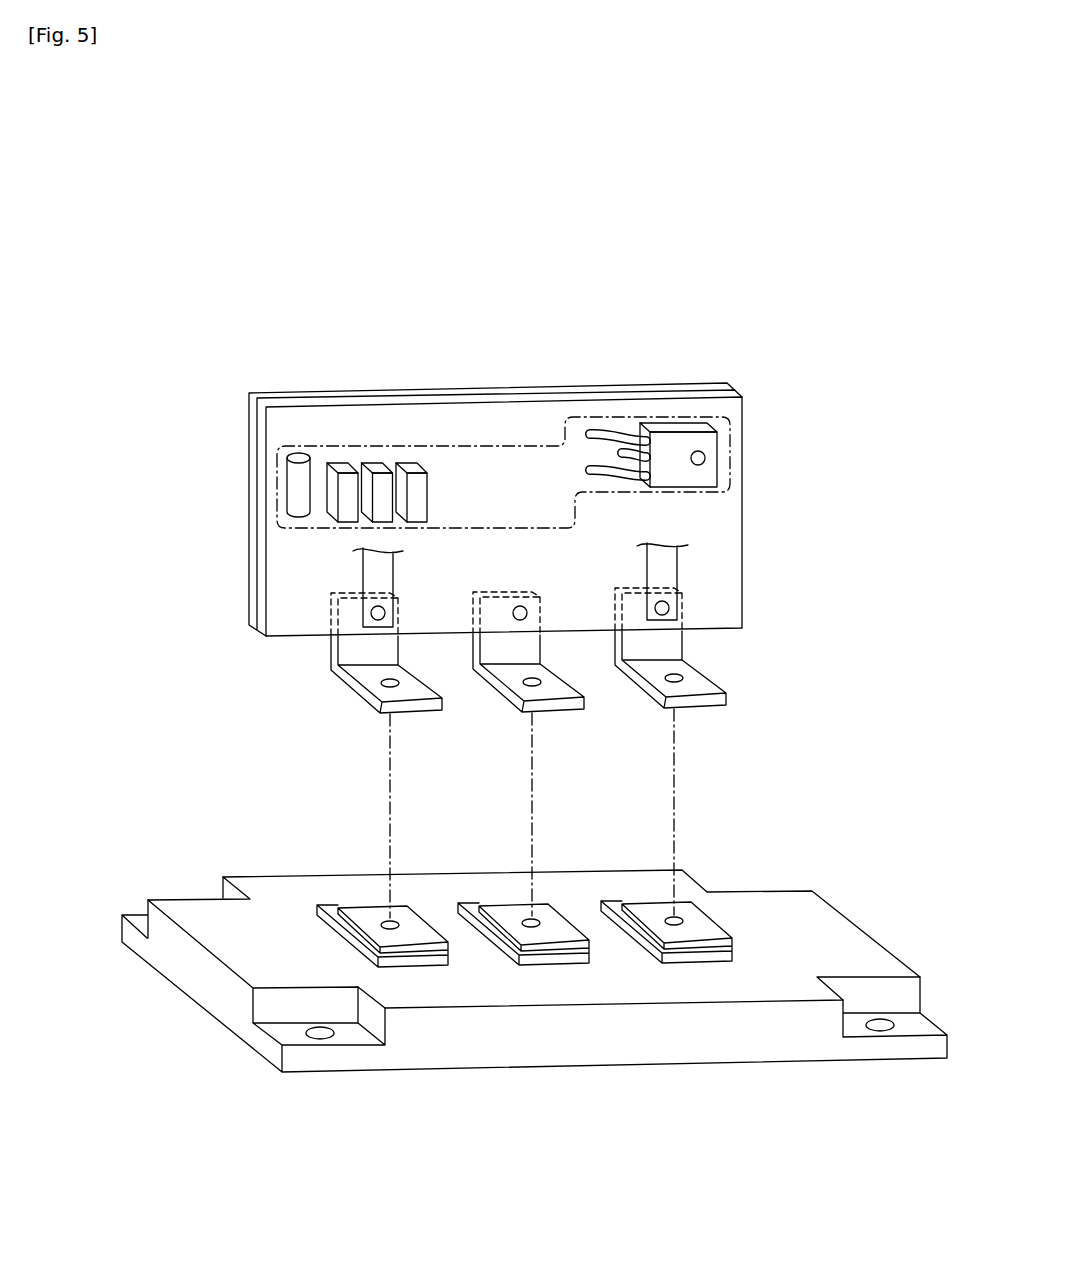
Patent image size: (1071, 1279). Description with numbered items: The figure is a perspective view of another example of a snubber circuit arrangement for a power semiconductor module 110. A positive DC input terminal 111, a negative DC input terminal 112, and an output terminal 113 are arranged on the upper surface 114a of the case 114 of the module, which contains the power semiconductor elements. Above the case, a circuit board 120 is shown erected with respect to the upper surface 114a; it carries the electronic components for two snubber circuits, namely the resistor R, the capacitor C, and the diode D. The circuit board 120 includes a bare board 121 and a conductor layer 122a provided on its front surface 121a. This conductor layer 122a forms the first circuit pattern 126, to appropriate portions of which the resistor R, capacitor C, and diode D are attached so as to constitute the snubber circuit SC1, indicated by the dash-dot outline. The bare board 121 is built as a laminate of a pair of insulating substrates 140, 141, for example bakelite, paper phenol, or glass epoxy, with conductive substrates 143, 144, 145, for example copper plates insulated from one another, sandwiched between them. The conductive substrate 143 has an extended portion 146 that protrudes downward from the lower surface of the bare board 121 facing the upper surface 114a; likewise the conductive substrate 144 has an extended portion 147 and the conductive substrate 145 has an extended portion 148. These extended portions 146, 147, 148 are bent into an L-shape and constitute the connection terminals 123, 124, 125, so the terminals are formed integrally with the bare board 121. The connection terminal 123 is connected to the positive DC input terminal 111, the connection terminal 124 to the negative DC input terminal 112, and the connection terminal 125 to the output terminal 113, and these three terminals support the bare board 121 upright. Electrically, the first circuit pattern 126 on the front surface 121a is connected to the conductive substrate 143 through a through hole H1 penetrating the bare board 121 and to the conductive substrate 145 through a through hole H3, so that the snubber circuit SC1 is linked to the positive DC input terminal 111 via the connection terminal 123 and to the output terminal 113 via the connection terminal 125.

The power semiconductor module 110 is at (201, 243).
The circuit board 120 is at (245, 429).
The bare board 121 is at (572, 287).
The insulating substrate 141 is at (500, 387).
The insulating substrate 140 is at (545, 394).
The front surface 121a is at (403, 423).
The resistor R is at (298, 454).
The capacitor C is at (378, 466).
The diode D is at (676, 438).
The snubber circuit SC1 is at (733, 452).
The conductor layer 122a is at (362, 560).
The first circuit pattern 126 is at (667, 563).
The through hole H1 is at (370, 613).
The through hole H3 is at (668, 608).
The conductive substrate 143 is at (326, 656).
The conductive substrate 144 is at (469, 657).
The conductive substrate 145 is at (611, 657).
The connection terminal 123 is at (366, 704).
The extended portion 146 is at (386, 674).
The connection terminal 124 is at (521, 721).
The extended portion 147 is at (528, 673).
The connection terminal 125 is at (665, 719).
The extended portion 148 is at (670, 669).
The case 114 is at (178, 990).
The upper surface 114a is at (822, 928).
The positive DC input terminal 111 is at (407, 938).
The negative DC input terminal 112 is at (552, 933).
The output terminal 113 is at (692, 928).